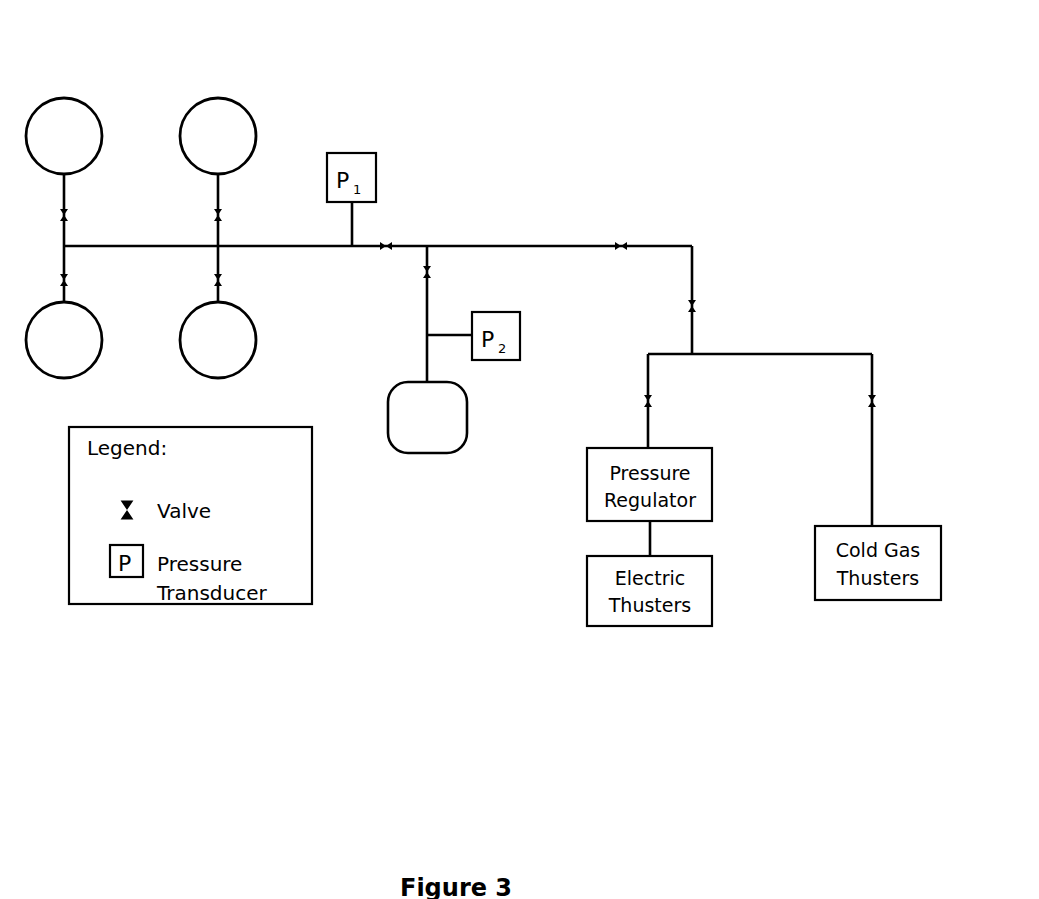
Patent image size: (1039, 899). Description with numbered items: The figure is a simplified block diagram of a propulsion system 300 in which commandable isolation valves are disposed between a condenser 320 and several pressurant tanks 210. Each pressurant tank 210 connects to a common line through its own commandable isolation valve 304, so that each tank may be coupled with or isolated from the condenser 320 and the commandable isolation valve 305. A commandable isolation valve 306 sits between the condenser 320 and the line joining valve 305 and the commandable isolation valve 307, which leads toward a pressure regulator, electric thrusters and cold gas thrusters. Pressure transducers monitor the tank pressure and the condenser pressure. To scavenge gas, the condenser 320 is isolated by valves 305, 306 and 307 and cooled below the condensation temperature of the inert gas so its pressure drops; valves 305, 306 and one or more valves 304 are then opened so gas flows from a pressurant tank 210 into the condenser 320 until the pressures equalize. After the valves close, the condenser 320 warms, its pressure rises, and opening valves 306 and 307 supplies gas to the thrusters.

The propulsion system 300 is at (184, 50).
The pressurant tank 210 is at (141, 238).
The commandable isolation valve 304 is at (68, 216).
The commandable isolation valve 305 is at (388, 244).
The commandable isolation valve 306 is at (431, 273).
The commandable isolation valve 307 is at (624, 243).
The condenser 320 is at (427, 417).